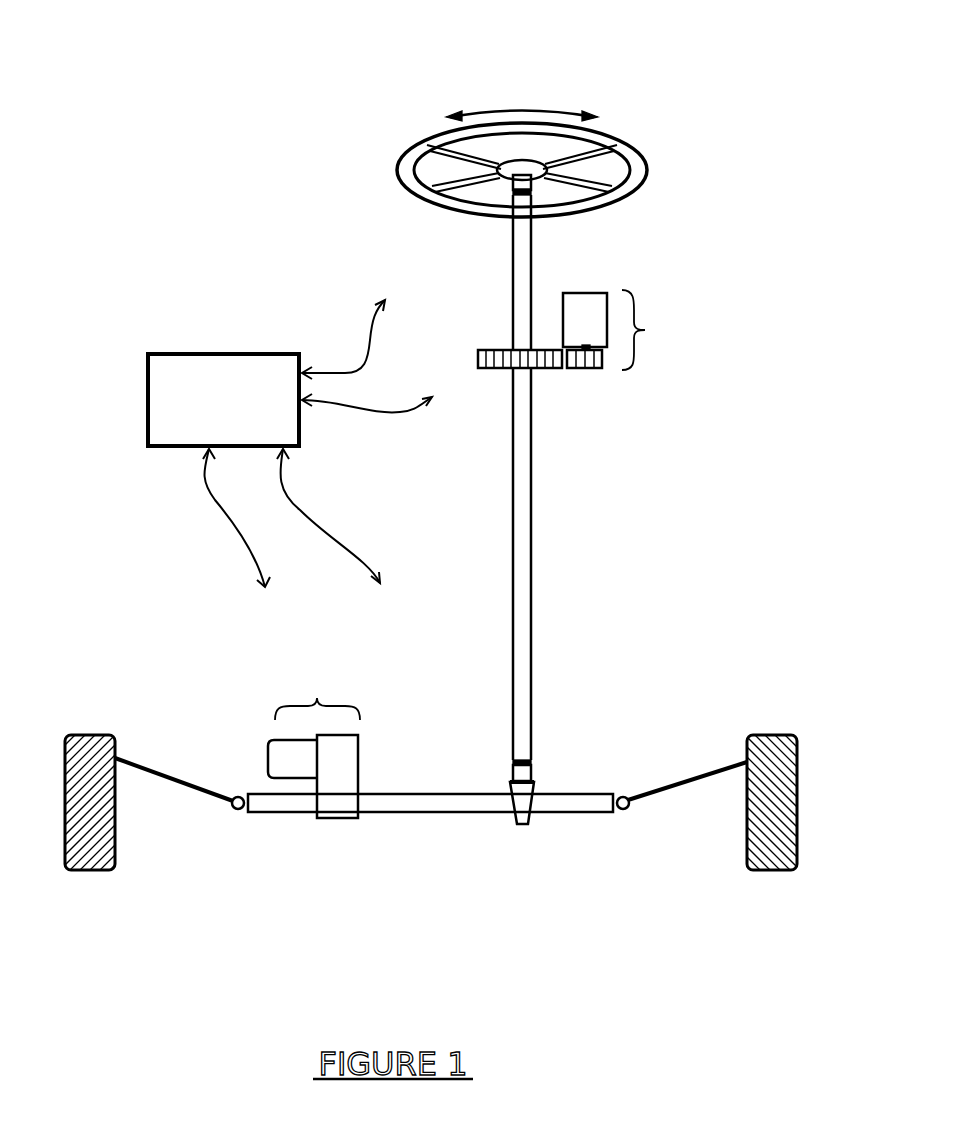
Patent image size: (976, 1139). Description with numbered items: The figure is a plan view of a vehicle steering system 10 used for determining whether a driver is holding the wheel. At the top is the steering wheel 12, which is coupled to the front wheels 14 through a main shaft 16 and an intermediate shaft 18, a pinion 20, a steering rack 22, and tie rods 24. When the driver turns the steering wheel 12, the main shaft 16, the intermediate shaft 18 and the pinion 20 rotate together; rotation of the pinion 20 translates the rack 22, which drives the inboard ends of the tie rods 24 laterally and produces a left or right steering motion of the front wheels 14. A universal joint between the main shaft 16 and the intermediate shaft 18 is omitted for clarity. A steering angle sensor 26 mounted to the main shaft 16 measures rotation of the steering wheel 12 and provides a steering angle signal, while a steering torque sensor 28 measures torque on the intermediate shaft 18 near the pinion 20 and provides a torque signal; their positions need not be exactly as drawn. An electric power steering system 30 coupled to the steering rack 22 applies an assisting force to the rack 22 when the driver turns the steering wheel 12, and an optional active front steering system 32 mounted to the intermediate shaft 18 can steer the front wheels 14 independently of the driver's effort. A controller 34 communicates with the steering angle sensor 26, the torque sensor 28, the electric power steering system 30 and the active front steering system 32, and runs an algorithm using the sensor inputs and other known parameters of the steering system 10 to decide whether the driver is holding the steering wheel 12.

The vehicle steering system 10 is at (175, 113).
The steering wheel 12 is at (630, 138).
The front wheels 14 is at (66, 852).
The main shaft 16 is at (532, 262).
The intermediate shaft 18 is at (532, 537).
The pinion 20 is at (524, 825).
The steering rack 22 is at (422, 813).
The tie rods 24 is at (184, 787).
The steering angle sensor 26 is at (513, 186).
The steering torque sensor 28 is at (533, 771).
The electric power steering (EPS) system 30 is at (314, 746).
The active front steering (AFS) system 32 is at (578, 330).
The controller 34 is at (212, 410).